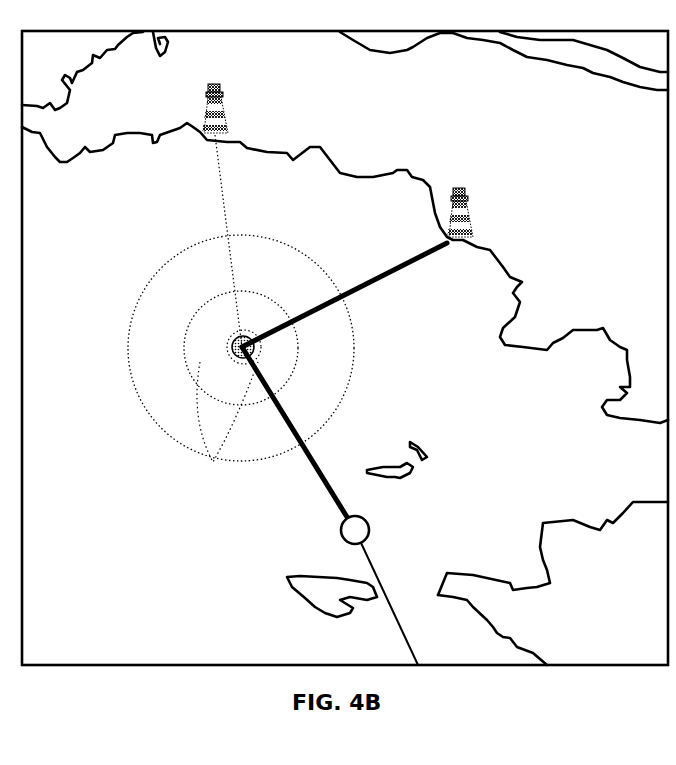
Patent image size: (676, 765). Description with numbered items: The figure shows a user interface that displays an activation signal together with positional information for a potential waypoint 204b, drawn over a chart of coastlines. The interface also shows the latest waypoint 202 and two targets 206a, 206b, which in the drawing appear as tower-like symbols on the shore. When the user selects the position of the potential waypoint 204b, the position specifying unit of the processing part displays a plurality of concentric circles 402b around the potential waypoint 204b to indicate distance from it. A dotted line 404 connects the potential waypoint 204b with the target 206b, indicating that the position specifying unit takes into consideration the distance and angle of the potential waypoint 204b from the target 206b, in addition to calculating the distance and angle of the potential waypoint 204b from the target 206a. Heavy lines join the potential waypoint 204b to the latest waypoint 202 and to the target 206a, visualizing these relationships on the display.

The latest waypoint 202 is at (341, 530).
The potential waypoint 204b is at (258, 352).
The target 206a is at (473, 200).
The target 206b is at (220, 98).
The plurality of concentric circles 402b is at (152, 413).
The dotted line 404 is at (222, 180).